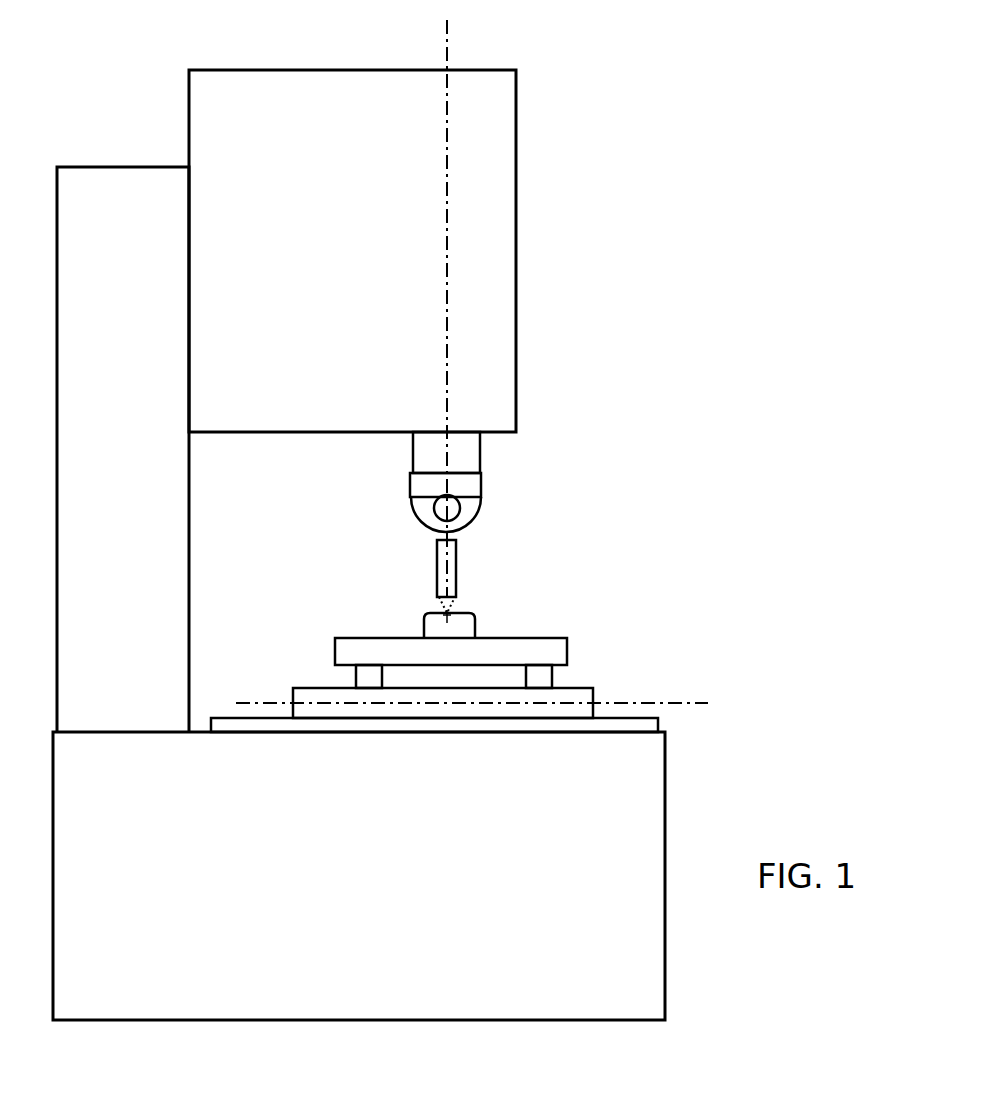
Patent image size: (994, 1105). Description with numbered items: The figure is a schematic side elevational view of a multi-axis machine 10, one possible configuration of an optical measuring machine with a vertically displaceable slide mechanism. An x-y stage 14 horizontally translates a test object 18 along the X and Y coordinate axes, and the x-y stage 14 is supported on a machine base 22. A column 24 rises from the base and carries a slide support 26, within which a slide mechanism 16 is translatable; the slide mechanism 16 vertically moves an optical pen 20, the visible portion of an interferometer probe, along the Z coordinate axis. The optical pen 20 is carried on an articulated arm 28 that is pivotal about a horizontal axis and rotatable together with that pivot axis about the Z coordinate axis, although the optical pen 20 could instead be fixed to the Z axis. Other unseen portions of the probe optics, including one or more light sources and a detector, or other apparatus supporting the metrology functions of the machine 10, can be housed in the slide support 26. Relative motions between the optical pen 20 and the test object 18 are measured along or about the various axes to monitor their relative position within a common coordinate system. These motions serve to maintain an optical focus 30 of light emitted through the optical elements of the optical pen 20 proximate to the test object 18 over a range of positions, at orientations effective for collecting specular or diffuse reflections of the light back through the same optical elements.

The multi-axis machine 10 is at (516, 240).
The x-y stage 14 is at (341, 638).
The slide mechanism 16 is at (413, 450).
The test object 18 is at (424, 616).
The optical pen 20 is at (457, 558).
The machine base 22 is at (359, 876).
The column 24 is at (123, 449).
The slide support 26 is at (352, 251).
The articulated arm 28 is at (481, 515).
The optical focus 30 is at (448, 613).